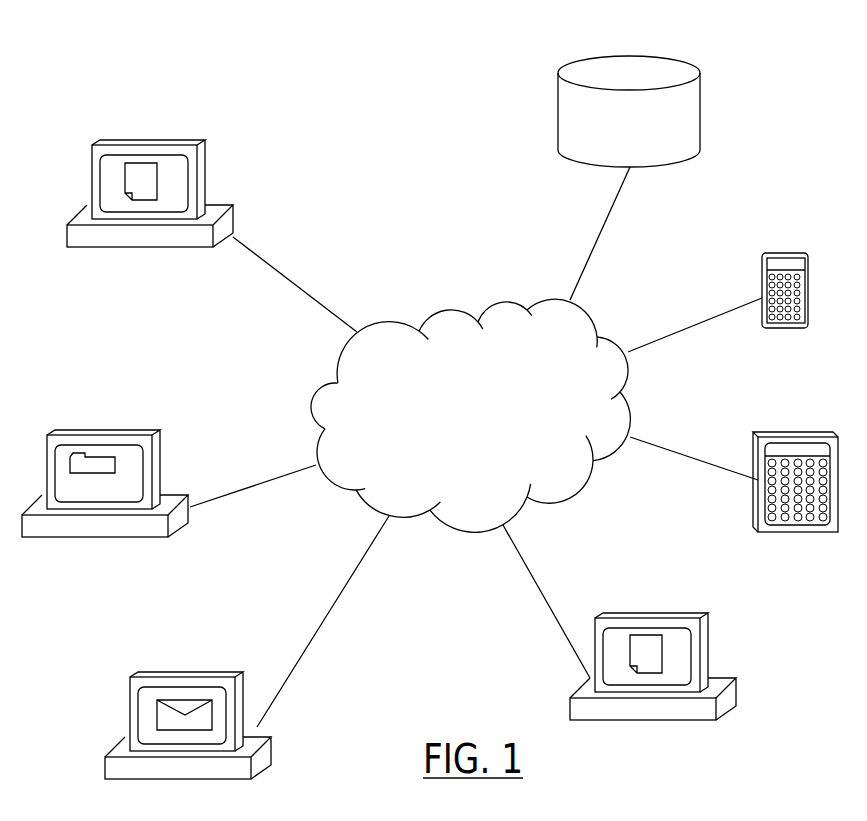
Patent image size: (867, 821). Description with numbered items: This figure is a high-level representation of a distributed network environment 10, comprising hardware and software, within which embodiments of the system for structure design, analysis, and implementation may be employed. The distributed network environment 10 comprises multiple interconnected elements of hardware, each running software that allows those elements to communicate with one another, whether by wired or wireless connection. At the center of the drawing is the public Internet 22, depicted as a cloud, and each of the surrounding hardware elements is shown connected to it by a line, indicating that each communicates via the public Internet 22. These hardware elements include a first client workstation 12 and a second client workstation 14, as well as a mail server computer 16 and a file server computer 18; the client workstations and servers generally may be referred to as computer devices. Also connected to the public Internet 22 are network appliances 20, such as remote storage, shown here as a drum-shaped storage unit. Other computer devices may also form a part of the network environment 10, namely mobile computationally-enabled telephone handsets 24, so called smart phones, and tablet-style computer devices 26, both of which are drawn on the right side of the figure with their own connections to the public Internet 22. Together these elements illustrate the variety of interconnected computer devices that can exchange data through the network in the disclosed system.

The distributed network environment 10 is at (375, 82).
The first client workstation 12 is at (205, 177).
The second client workstation 14 is at (708, 645).
The mail server computer 16 is at (127, 717).
The file server computer 18 is at (160, 467).
The network appliances 20 is at (558, 112).
The public Internet 22 is at (522, 302).
The mobile computationally-enabled telephone handsets 24 is at (762, 278).
The tablet-style computer devices 26 is at (790, 432).